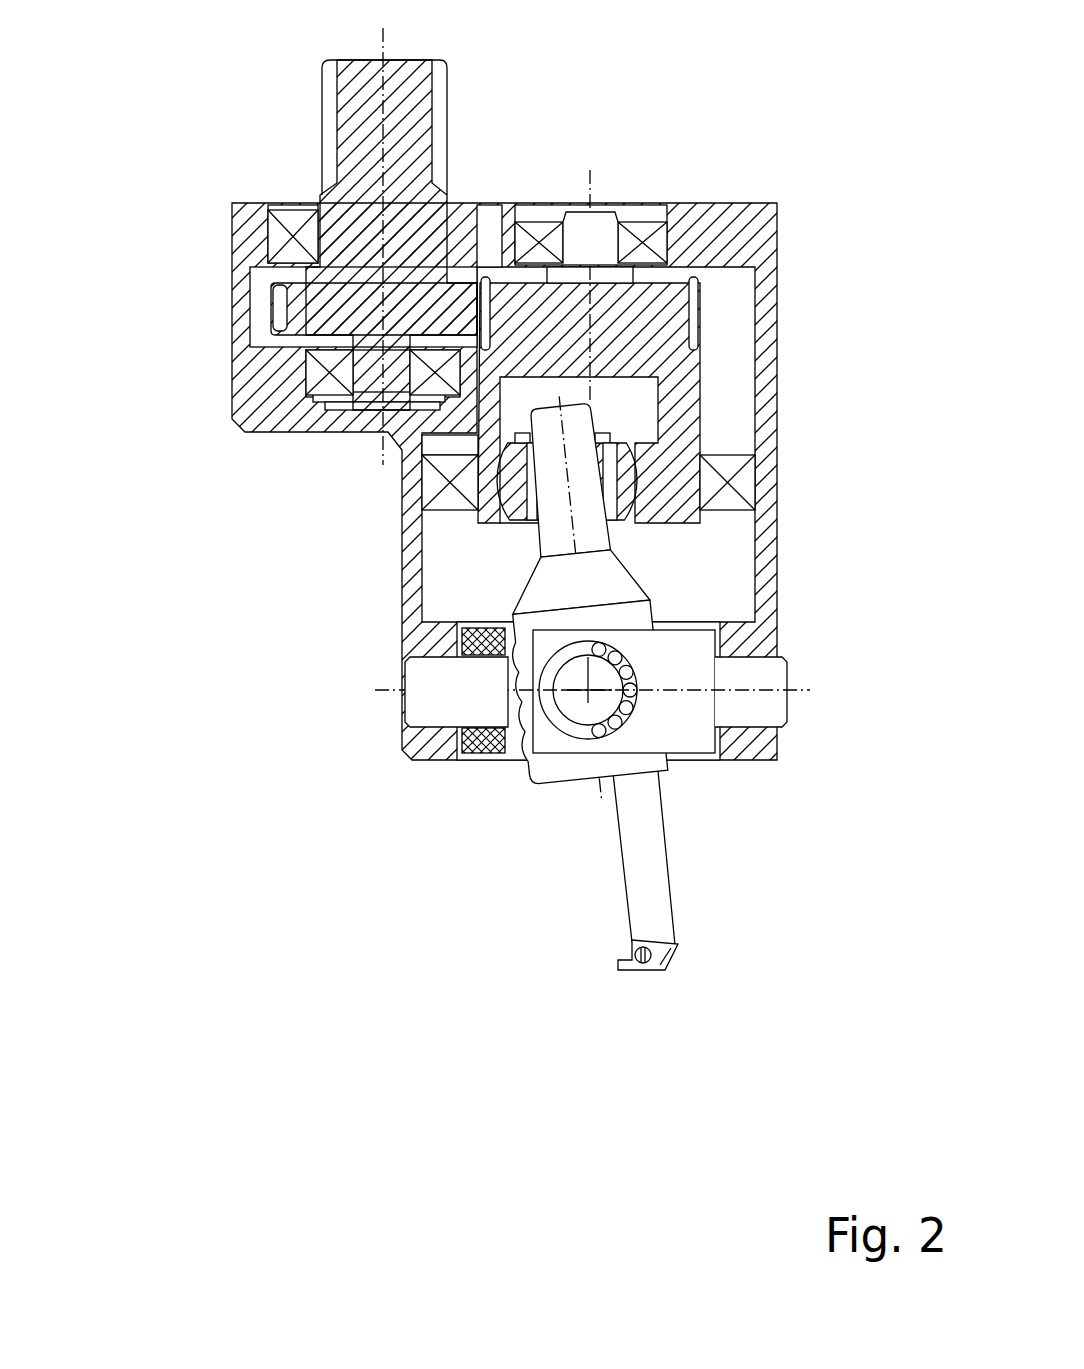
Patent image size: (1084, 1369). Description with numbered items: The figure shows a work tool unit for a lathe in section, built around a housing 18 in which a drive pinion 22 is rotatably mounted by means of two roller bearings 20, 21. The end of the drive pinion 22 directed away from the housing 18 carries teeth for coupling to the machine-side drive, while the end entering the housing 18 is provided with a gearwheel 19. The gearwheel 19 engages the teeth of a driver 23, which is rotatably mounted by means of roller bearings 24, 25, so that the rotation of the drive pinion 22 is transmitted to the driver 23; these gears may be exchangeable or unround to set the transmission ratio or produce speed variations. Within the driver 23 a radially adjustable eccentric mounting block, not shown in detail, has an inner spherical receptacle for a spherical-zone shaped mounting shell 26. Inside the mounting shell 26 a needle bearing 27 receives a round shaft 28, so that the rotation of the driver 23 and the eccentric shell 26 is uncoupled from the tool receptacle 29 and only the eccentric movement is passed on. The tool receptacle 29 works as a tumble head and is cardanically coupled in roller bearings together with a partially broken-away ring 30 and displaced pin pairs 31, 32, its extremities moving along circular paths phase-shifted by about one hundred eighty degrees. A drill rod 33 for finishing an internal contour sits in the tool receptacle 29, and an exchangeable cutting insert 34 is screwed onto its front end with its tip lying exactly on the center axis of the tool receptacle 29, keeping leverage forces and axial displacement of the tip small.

The housing 18 is at (425, 743).
The gearwheel 19 is at (318, 307).
The roller bearing 20 is at (275, 240).
The roller bearing 21 is at (317, 377).
The drive pinion 22 is at (355, 130).
The driver 23 is at (650, 309).
The roller bearing 24 is at (657, 240).
The roller bearing 25 is at (433, 482).
The mounting shell 26 is at (517, 522).
The needle bearing 27 is at (610, 497).
The round shaft 28 is at (578, 425).
The tool receptacle 29 is at (597, 567).
The ring 30 is at (692, 742).
The pin pair 31 is at (598, 673).
The pin pair 32 is at (430, 670).
The drill rod 33 is at (650, 907).
The cutting insert 34 is at (622, 969).